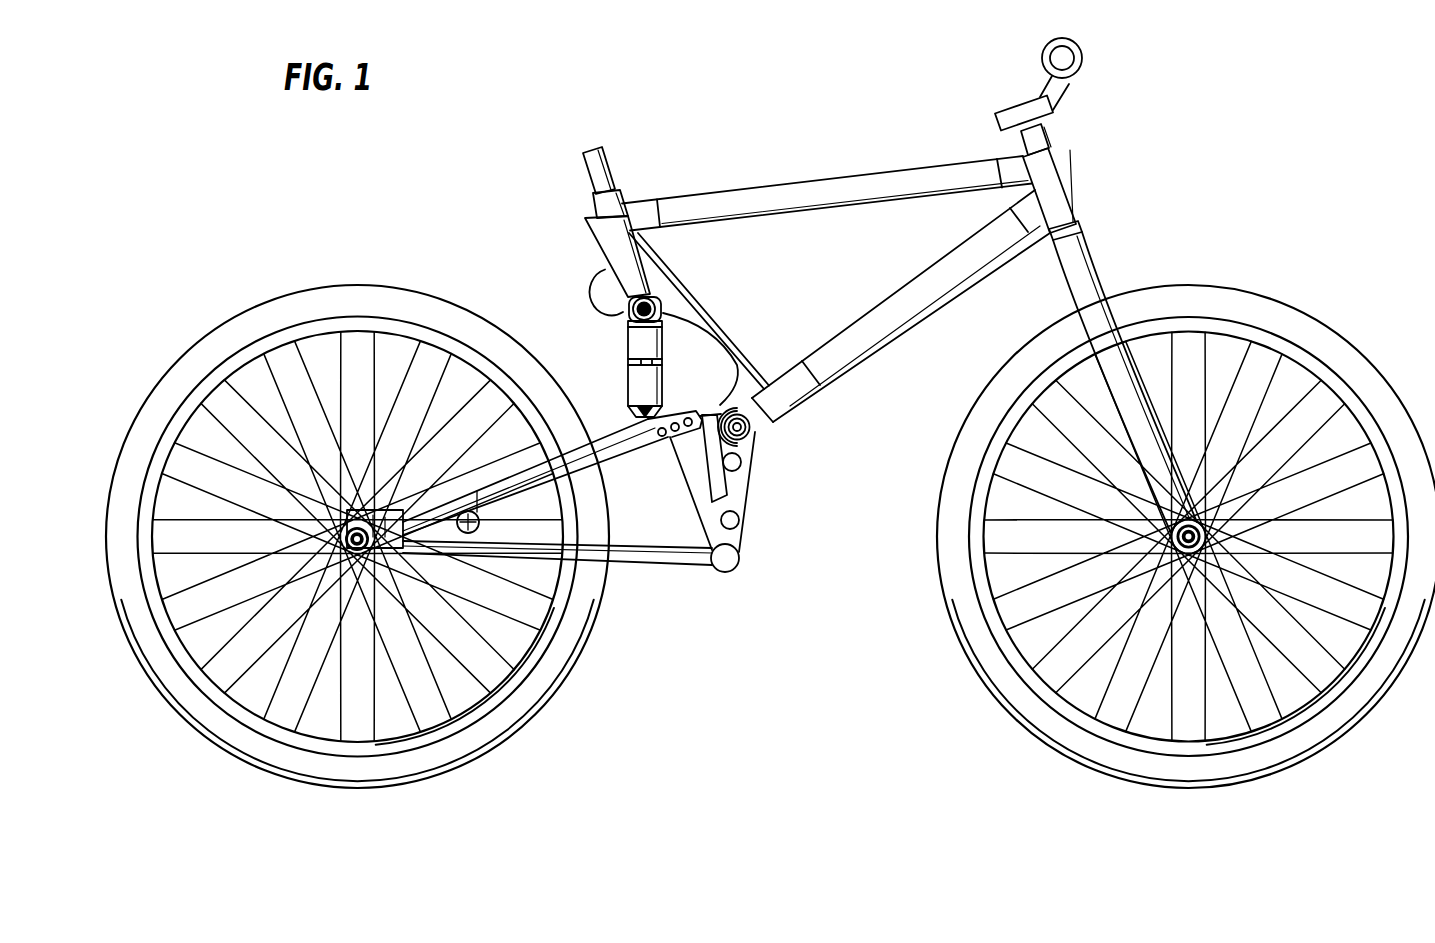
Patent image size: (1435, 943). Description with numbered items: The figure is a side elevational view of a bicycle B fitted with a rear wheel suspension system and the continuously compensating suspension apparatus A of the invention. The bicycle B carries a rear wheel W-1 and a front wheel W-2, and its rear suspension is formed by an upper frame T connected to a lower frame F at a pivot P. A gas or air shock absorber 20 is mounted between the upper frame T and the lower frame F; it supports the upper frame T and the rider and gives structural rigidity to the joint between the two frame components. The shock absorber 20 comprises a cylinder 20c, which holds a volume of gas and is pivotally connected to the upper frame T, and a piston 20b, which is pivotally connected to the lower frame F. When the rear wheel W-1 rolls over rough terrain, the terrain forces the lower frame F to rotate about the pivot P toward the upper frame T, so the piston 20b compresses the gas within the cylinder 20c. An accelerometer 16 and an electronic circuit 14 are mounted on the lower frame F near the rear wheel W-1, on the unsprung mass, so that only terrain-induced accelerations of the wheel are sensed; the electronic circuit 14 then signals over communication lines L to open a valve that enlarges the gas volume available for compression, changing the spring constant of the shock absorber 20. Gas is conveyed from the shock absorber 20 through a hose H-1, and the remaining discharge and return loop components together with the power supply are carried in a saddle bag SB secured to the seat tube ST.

The rear wheel W-1 is at (345, 286).
The front wheel W-2 is at (1186, 286).
The continuously compensating suspension apparatus A is at (569, 229).
The seat tube ST is at (625, 200).
The saddle bag SB is at (585, 228).
The hose H-1 is at (583, 292).
The bicycle B is at (790, 184).
The communication lines L is at (710, 305).
The upper frame T is at (757, 367).
The pivot P is at (752, 436).
The shock absorber 20 is at (642, 334).
The piston 20b is at (645, 388).
The cylinder 20c is at (628, 340).
The electronic circuit 14 is at (403, 550).
The accelerometer 16 is at (480, 521).
The lower frame F is at (428, 508).